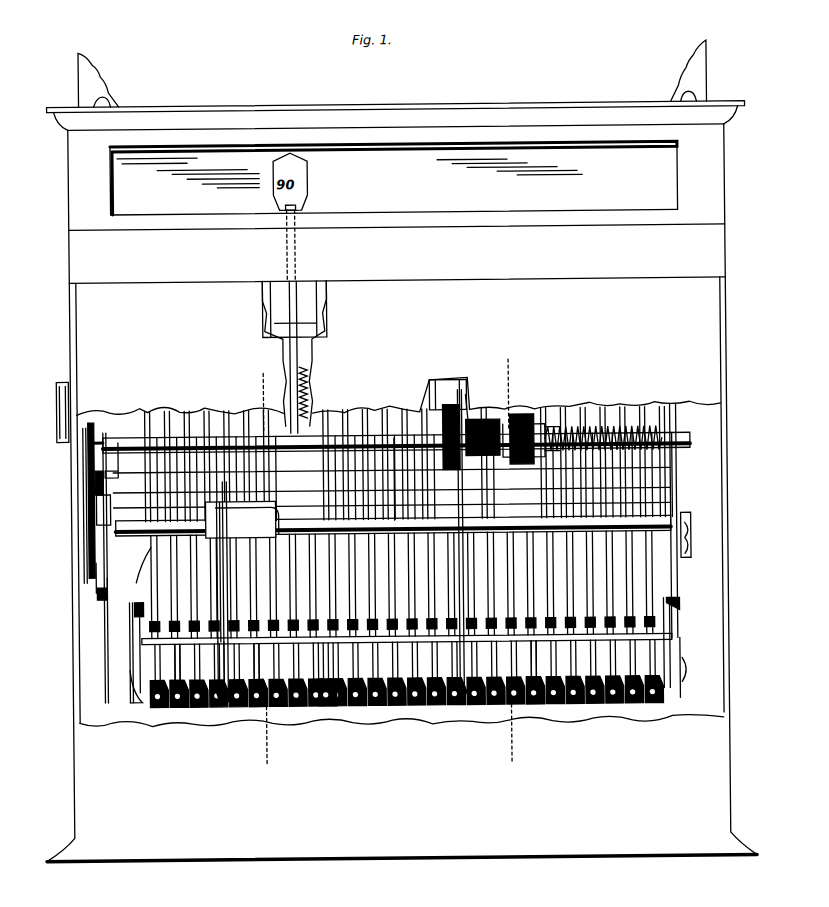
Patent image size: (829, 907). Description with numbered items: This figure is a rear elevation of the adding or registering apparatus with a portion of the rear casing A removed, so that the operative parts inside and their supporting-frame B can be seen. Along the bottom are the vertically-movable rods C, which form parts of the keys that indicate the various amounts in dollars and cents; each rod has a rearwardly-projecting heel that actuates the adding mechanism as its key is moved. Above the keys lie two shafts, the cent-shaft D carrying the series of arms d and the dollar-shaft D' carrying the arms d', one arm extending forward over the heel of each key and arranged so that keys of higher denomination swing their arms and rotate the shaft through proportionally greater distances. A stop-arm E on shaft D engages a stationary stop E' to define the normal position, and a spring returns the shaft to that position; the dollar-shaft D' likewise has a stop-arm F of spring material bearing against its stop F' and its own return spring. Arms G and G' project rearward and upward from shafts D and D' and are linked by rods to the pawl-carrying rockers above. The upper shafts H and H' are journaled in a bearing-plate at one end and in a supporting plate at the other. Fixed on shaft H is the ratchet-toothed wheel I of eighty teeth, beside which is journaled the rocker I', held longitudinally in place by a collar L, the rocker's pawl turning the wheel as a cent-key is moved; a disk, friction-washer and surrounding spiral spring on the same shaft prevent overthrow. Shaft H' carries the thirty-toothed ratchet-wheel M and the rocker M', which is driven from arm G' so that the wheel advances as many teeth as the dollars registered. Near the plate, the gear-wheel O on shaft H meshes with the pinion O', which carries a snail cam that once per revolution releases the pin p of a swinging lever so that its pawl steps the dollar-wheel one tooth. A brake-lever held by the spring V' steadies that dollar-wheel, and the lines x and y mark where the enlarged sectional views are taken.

The casing A is at (71, 318).
The gear-wheel O is at (99, 498).
The pinion O' is at (125, 450).
The pin p is at (95, 479).
The spring V' is at (75, 588).
The shaft H is at (686, 520).
The shaft H' is at (139, 565).
The rocker M' is at (393, 494).
The ratchet-wheel M is at (199, 592).
The stop F' is at (124, 651).
The stop-arm F is at (122, 655).
The vertically-movable rods C is at (155, 653).
The supporting-frame B is at (126, 698).
The arms d' is at (229, 675).
The shaft D' is at (156, 697).
The arm G' is at (218, 694).
The arms d is at (486, 695).
The shaft D is at (551, 693).
The arm G is at (470, 568).
The section line y y is at (260, 571).
The section line x x is at (507, 564).
The ratchet-toothed wheel I is at (396, 428).
The rocker I' is at (386, 458).
The collar L is at (512, 420).
The stop E' is at (688, 602).
The stop-arm E is at (683, 642).